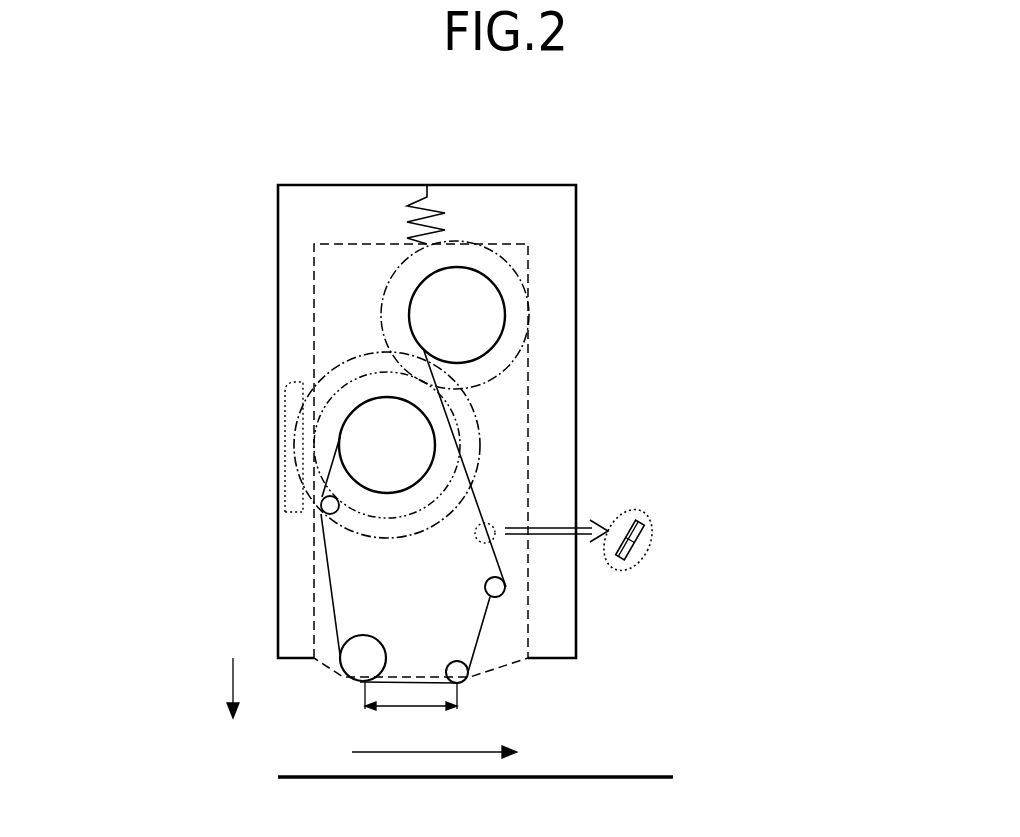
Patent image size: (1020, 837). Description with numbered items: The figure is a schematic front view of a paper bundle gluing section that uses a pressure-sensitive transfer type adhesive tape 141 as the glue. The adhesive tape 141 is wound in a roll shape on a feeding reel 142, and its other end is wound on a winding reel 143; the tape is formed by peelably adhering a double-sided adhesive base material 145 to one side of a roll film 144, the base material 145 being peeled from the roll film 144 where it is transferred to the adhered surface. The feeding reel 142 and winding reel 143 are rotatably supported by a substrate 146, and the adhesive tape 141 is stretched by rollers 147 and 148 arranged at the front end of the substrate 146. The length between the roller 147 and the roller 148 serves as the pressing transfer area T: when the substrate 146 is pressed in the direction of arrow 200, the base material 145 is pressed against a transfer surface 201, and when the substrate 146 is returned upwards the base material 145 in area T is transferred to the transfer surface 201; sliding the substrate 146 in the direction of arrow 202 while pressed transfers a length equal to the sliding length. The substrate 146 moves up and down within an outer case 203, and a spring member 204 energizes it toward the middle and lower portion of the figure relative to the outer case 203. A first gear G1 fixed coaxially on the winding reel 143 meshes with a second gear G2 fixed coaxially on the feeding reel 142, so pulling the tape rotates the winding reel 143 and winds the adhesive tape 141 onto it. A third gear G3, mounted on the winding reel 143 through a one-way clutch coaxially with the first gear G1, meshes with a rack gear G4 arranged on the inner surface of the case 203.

The adhesive tape 141 is at (487, 637).
The feeding reel 142 is at (507, 317).
The winding reel 143 is at (370, 407).
The roll film 144 is at (628, 520).
The base material 145 is at (647, 547).
The substrate 146 is at (513, 244).
The roller 147 is at (348, 668).
The roller 148 is at (460, 682).
The arrow 200 is at (232, 701).
The transfer surface 201 is at (612, 775).
The arrow 202 is at (464, 750).
The outer case 203 is at (576, 250).
The spring member 204 is at (433, 208).
The first gear G1 is at (367, 520).
The second gear G2 is at (493, 387).
The third gear G3 is at (420, 538).
The rack gear G4 is at (282, 383).
The pressing transfer area T is at (411, 710).